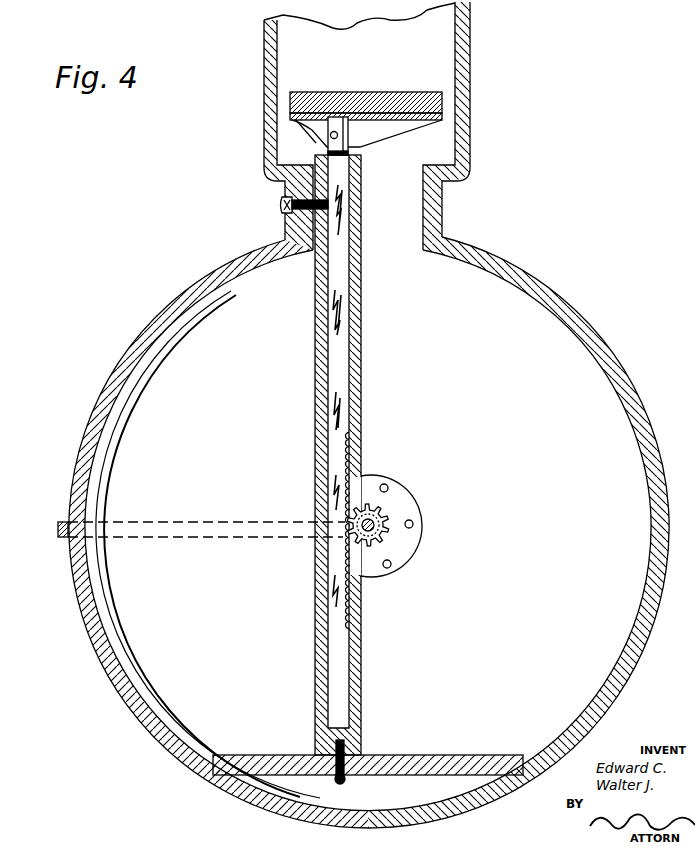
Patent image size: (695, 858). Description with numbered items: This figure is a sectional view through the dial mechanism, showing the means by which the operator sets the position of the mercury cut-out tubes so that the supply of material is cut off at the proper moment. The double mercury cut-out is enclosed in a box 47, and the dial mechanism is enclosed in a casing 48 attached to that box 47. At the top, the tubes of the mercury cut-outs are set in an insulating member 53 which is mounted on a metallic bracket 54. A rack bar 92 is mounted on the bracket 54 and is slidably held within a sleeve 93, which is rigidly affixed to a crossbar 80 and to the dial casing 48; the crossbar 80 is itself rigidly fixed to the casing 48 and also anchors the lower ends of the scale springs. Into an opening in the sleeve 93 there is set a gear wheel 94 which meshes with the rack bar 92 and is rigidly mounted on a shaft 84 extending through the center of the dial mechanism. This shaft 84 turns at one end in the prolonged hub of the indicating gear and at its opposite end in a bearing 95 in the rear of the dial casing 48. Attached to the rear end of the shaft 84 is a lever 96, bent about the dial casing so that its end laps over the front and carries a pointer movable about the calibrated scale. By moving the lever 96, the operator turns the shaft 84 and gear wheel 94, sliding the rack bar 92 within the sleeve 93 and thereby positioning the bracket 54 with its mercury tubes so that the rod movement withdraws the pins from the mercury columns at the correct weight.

The box 47 is at (470, 80).
The casing 48 is at (580, 320).
The insulating member 53 is at (428, 73).
The metallic bracket 54 is at (383, 120).
The crossbar 80 is at (458, 767).
The shaft 84 is at (405, 540).
The rack bar 92 is at (340, 365).
The sleeve 93 is at (357, 322).
The gear wheel 94 is at (385, 512).
The bearing 95 is at (403, 555).
The lever 96 is at (58, 528).